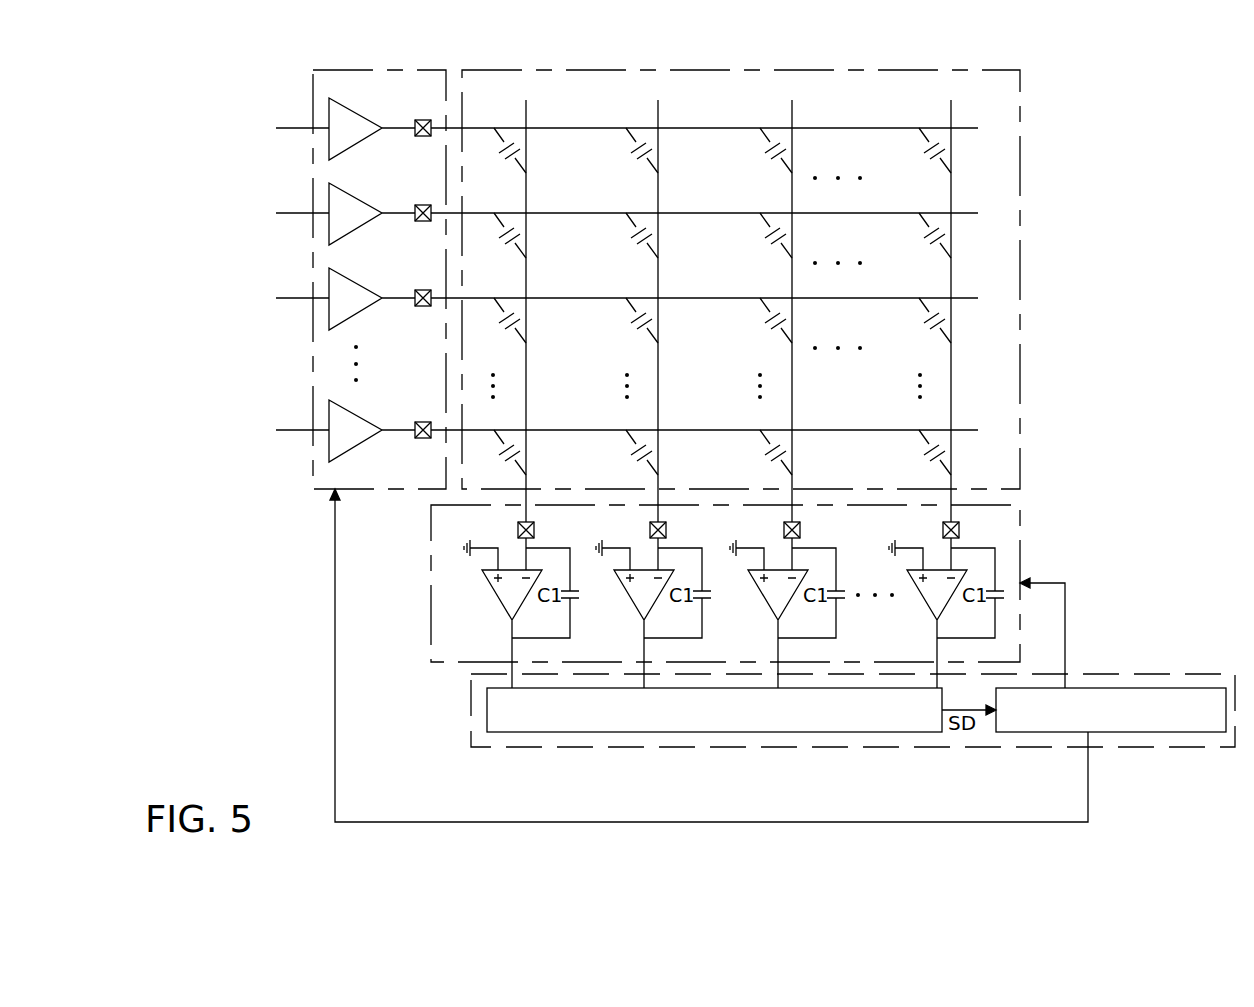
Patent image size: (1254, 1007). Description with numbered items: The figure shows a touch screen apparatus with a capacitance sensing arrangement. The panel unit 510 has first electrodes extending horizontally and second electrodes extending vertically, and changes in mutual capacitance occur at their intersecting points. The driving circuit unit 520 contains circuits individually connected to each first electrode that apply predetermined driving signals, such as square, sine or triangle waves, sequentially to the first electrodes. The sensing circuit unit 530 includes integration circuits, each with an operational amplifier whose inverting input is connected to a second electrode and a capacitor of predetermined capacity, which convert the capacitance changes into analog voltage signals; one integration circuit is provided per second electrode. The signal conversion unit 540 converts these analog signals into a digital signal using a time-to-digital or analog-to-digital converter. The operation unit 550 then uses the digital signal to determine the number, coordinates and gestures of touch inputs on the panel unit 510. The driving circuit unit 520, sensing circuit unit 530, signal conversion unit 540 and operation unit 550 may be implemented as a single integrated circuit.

The panel unit 510 is at (756, 70).
The driving circuit unit 520 is at (376, 70).
The sensing circuit unit 530 is at (431, 585).
The signal conversion unit 540 is at (727, 733).
The operation unit 550 is at (1062, 733).